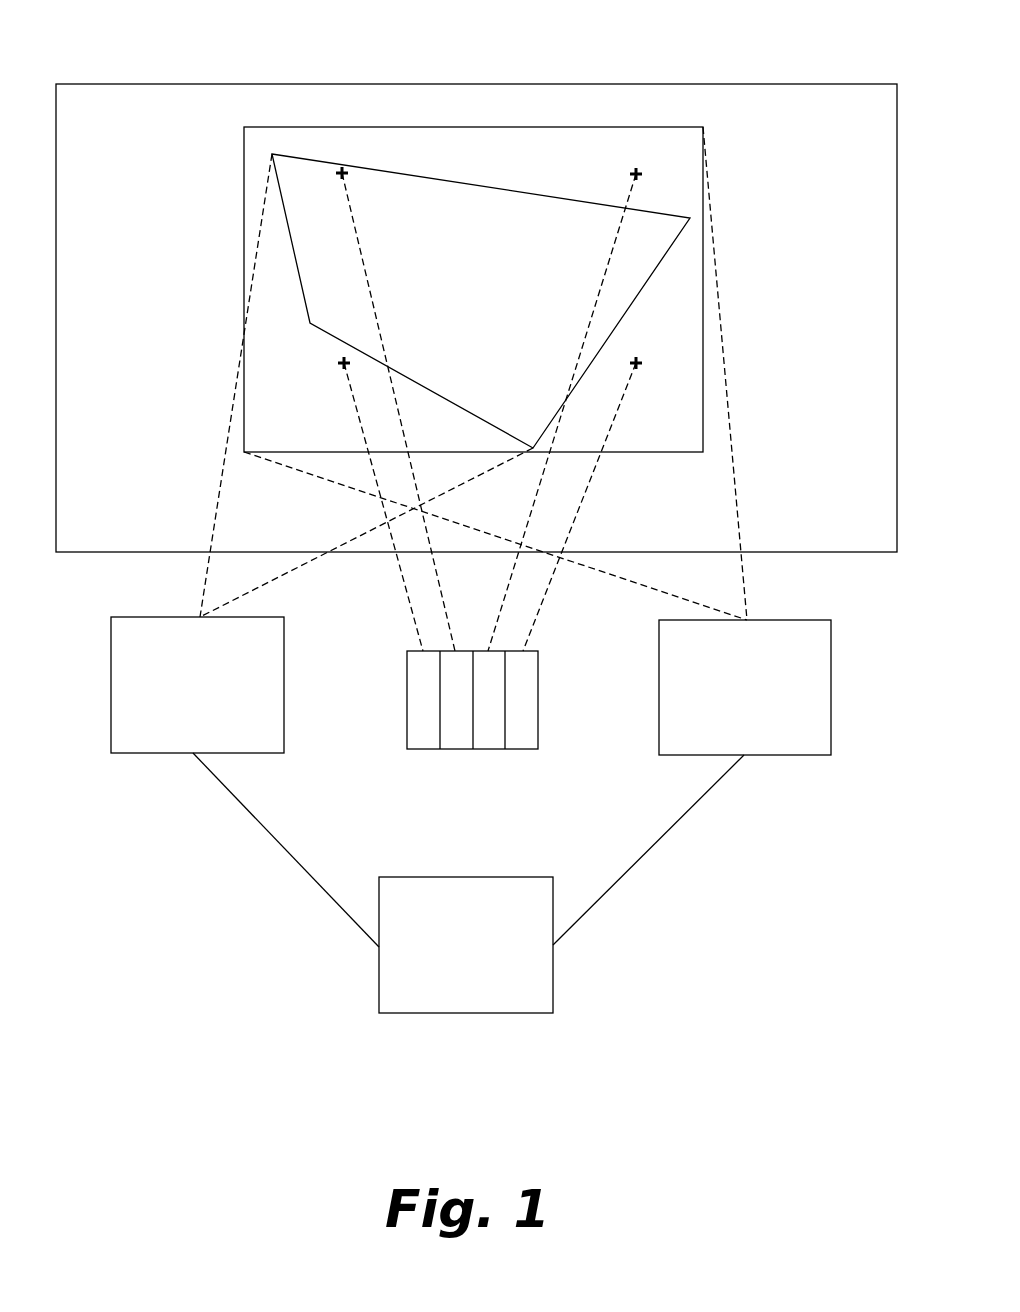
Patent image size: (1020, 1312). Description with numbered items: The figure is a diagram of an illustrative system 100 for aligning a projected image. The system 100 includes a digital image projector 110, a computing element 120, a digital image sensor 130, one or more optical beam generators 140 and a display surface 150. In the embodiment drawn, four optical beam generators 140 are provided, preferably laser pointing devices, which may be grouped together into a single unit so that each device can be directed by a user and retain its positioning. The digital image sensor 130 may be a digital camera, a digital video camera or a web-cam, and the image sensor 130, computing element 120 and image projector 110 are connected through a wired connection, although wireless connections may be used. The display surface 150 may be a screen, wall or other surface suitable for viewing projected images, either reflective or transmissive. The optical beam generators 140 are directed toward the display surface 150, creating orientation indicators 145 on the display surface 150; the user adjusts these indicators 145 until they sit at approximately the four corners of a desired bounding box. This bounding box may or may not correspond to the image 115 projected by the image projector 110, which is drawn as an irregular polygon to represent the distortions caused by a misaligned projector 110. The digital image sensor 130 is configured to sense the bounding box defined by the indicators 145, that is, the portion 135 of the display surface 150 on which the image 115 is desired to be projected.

The system 100 is at (150, 54).
The digital image projector 110 is at (168, 715).
The image 115 is at (312, 160).
The computing element 120 is at (438, 980).
The digital image sensor 130 is at (767, 718).
The portion of the display surface 135 is at (667, 127).
The optical beam generators 140 is at (525, 742).
The orientation indicators 145 is at (633, 175).
The display surface 150 is at (160, 552).